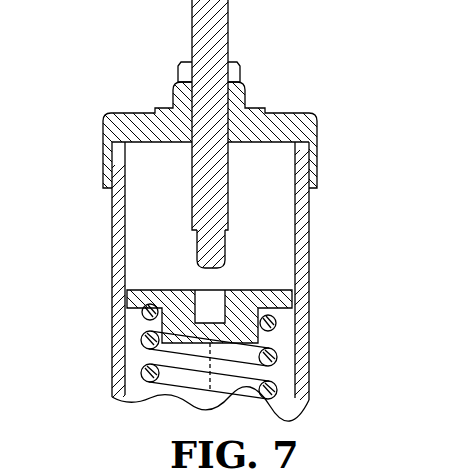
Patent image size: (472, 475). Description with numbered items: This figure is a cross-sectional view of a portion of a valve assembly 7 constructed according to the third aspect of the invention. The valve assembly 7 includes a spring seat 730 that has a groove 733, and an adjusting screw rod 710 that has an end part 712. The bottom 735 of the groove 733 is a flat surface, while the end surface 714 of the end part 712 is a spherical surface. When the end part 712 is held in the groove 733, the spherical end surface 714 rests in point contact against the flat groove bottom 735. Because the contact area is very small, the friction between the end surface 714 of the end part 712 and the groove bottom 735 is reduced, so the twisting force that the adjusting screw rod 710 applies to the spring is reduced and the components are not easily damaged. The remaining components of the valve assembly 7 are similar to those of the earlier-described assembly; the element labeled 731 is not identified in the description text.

The valve assembly 7 is at (118, 52).
The adjusting screw rod 710 is at (230, 173).
The end part 712 is at (215, 247).
The end surface 714 is at (228, 267).
The spring seat 730 is at (140, 310).
The seal ring 731 is at (270, 297).
The groove 733 is at (213, 305).
The groove bottom 735 is at (277, 360).